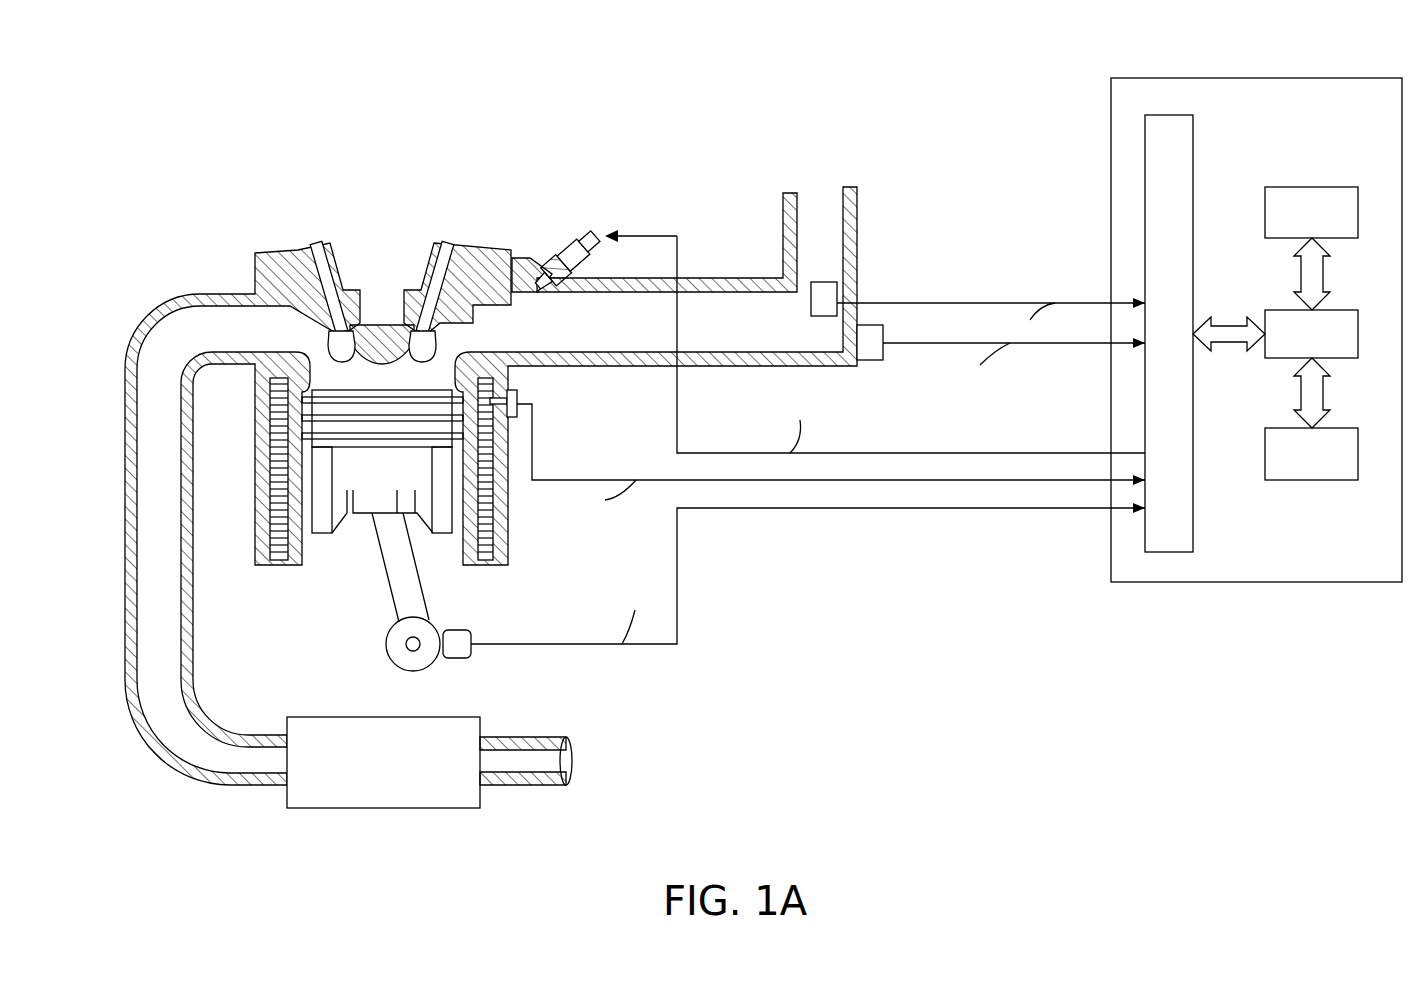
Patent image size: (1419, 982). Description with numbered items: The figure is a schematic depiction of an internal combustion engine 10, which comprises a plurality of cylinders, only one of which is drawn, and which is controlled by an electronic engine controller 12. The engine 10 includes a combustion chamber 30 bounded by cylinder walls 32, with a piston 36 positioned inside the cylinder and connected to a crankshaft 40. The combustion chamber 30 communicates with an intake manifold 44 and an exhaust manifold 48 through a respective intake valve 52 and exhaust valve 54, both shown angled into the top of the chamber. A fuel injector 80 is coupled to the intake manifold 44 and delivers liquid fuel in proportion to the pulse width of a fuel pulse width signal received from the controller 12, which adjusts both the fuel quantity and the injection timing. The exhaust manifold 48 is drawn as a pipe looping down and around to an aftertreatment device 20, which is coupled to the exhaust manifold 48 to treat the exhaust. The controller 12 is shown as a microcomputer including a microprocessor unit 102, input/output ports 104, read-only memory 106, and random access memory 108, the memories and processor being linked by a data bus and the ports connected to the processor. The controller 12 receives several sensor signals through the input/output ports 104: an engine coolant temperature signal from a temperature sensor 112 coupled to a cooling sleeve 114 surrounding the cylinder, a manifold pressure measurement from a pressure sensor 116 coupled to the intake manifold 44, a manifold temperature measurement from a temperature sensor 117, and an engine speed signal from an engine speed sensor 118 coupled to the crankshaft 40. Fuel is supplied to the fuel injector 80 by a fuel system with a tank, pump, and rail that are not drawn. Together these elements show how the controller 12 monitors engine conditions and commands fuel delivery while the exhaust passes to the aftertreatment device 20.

The internal combustion engine 10 is at (228, 232).
The electronic engine controller 12 is at (1255, 78).
The aftertreatment device 20 is at (345, 717).
The combustion chamber 30 is at (368, 380).
The cylinder walls 32 is at (305, 560).
The piston 36 is at (397, 490).
The crankshaft 40 is at (430, 660).
The intake manifold 44 is at (753, 333).
The exhaust manifold 48 is at (144, 389).
The intake valve 52 is at (442, 345).
The exhaust valve 54 is at (322, 345).
The fuel injector 80 is at (556, 259).
The microprocessor unit 102 is at (1348, 310).
The input/output ports 104 is at (1193, 133).
The read-only memory 106 is at (1313, 187).
The random access memory 108 is at (1348, 428).
The temperature sensor 112 is at (520, 400).
The cooling sleeve 114 is at (490, 568).
The pressure sensor 116 is at (823, 282).
The temperature sensor 117 is at (868, 360).
The engine speed sensor 118 is at (475, 650).